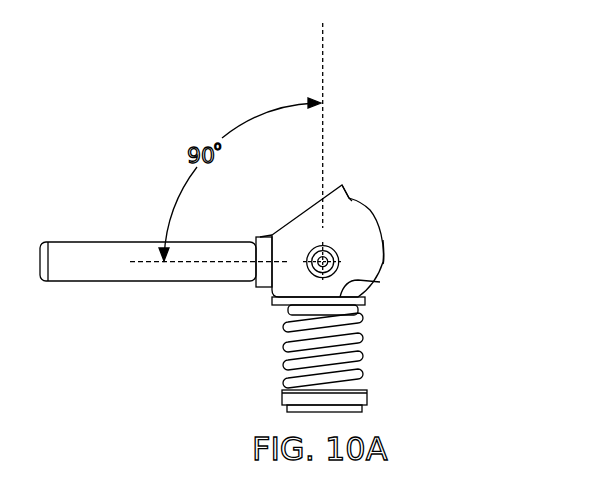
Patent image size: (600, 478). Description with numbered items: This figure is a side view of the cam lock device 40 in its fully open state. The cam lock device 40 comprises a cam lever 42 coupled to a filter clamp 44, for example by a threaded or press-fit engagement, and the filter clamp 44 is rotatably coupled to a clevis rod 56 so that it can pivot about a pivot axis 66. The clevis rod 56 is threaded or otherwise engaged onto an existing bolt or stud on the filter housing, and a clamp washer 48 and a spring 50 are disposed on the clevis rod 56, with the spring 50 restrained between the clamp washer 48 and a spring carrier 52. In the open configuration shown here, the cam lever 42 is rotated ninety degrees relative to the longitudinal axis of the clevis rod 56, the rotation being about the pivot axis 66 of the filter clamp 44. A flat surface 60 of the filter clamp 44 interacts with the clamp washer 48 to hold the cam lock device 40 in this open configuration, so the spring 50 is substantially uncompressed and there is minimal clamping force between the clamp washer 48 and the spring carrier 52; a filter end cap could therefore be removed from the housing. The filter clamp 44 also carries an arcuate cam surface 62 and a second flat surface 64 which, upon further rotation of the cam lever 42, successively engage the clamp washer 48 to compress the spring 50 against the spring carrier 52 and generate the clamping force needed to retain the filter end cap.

The cam lock device 40 is at (234, 91).
The cam lever 42 is at (108, 242).
The filter clamp 44 is at (350, 198).
The clamp washer 48 is at (275, 297).
The spring 50 is at (363, 365).
The spring carrier 52 is at (282, 396).
The clevis rod 56 is at (283, 361).
The flat surface 60 is at (380, 282).
The arcuate cam surface 62 is at (384, 256).
The second flat surface 64 is at (362, 203).
The pivot axis 66 is at (332, 255).